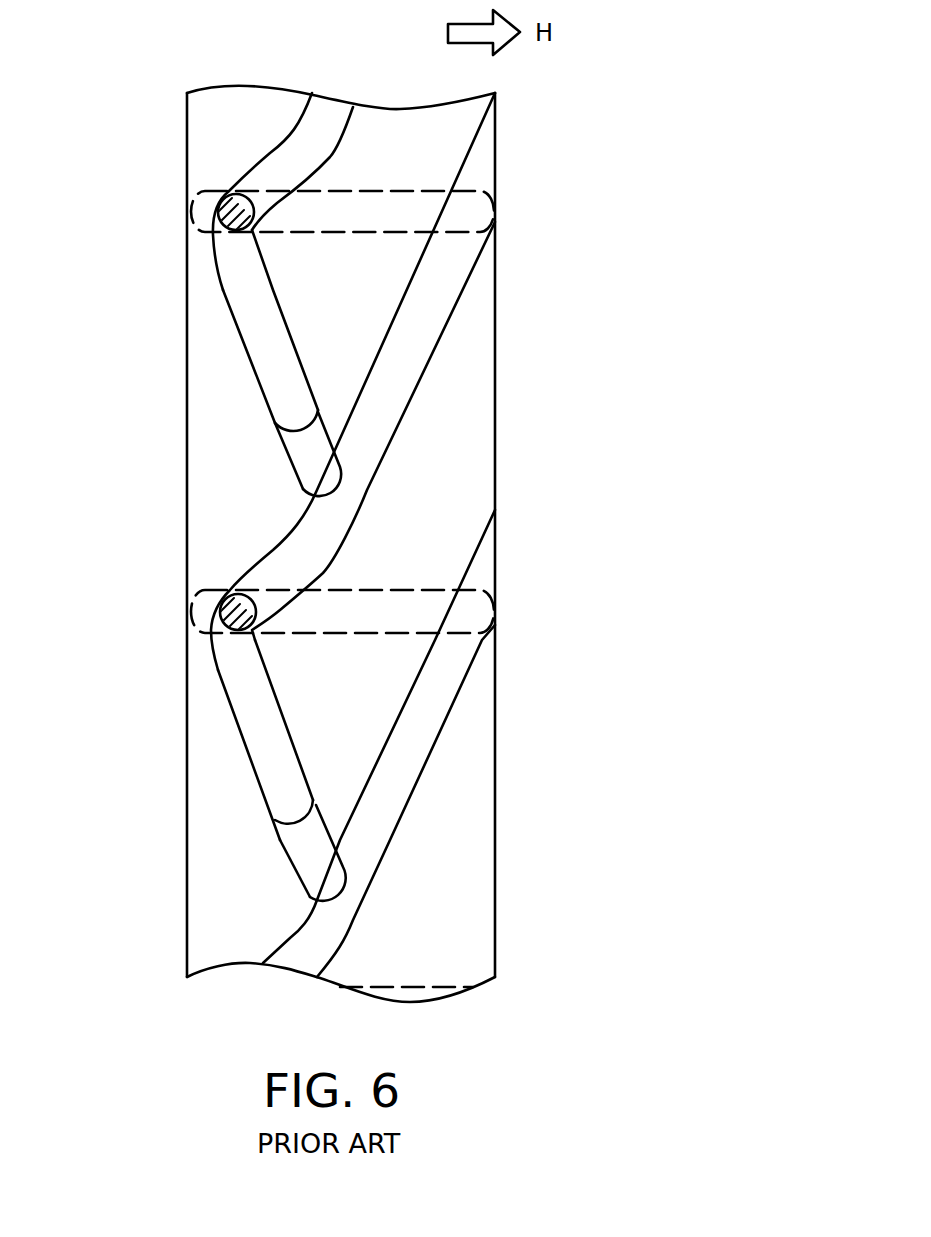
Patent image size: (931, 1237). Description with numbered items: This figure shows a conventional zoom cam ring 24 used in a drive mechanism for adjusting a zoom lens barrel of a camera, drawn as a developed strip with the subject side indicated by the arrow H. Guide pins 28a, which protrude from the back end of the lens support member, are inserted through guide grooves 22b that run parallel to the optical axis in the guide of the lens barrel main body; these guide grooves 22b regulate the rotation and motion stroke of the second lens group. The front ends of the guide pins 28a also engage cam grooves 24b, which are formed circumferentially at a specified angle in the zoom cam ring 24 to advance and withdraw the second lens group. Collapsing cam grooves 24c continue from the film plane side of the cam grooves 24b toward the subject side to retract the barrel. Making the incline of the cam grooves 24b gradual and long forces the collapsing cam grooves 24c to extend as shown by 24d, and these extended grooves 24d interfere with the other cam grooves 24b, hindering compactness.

The zoom cam ring 24 is at (477, 457).
The guide grooves 22b is at (420, 210).
The guide pins 28a is at (200, 222).
The cam grooves 24b is at (427, 323).
The collapsing cam grooves 24c is at (258, 352).
The extended cam grooves 24d is at (297, 475).